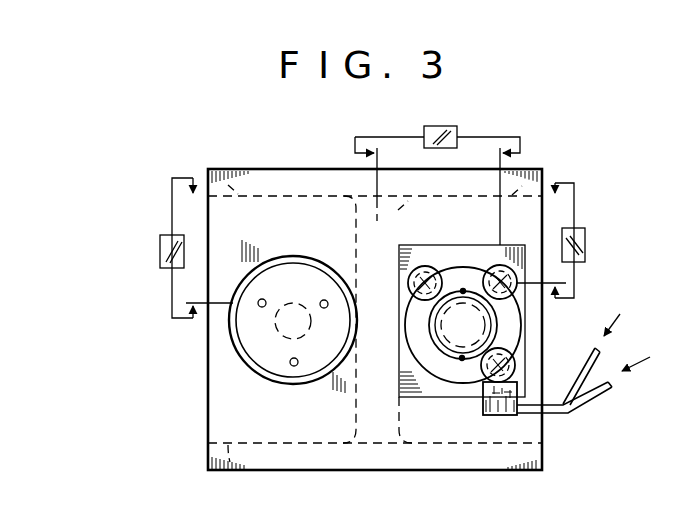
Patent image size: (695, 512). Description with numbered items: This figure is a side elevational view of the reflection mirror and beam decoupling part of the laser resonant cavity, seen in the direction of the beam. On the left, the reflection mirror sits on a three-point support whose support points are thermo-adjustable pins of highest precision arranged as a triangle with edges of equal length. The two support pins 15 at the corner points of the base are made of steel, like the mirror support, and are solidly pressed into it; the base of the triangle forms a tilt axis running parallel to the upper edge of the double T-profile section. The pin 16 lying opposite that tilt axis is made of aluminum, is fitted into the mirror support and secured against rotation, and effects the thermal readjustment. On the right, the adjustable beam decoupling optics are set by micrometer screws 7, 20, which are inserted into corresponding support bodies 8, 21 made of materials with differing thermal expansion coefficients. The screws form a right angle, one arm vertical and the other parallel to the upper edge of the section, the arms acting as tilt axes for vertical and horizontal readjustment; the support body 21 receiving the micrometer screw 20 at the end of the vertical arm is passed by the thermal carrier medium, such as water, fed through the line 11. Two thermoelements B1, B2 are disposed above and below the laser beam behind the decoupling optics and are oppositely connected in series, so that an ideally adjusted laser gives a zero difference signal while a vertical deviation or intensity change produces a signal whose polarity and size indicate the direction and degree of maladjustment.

The micrometer screw 7 is at (503, 270).
The support body 8 is at (516, 294).
The line 11 is at (557, 413).
The support pin 15 is at (321, 300).
The pin 16 is at (291, 366).
The micrometer screw 20 is at (513, 357).
The support body 21 is at (490, 401).
The thermoelement B1 is at (463, 289).
The thermoelement B2 is at (460, 358).